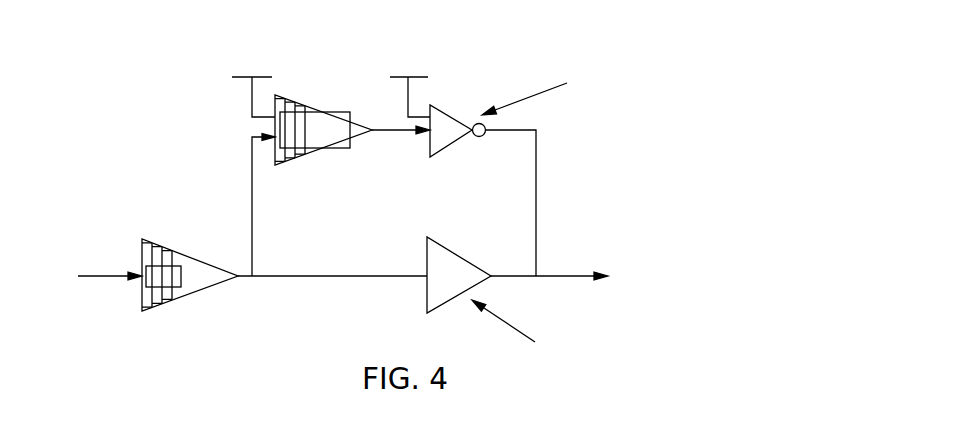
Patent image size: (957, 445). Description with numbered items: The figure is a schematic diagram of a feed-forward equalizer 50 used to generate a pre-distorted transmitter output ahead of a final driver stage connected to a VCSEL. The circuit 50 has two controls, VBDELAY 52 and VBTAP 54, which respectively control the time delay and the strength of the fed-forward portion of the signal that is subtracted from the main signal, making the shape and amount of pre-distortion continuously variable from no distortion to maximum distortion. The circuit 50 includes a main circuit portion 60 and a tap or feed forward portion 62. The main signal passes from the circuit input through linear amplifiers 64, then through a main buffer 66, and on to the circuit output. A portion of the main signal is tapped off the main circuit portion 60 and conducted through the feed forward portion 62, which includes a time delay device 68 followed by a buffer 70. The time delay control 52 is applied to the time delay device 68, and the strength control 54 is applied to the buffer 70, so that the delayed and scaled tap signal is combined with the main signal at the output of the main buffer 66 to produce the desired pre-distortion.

The feed-forward equalizer 50 is at (128, 43).
The VBDELAY time delay control 52 is at (309, 44).
The VBTAP strength control 54 is at (459, 52).
The main circuit portion 60 is at (304, 308).
The feed forward portion 62 is at (179, 155).
The linear amplifiers 64 is at (175, 239).
The main buffer 66 is at (462, 252).
The time delay device 68 is at (330, 162).
The buffer 70 is at (453, 147).